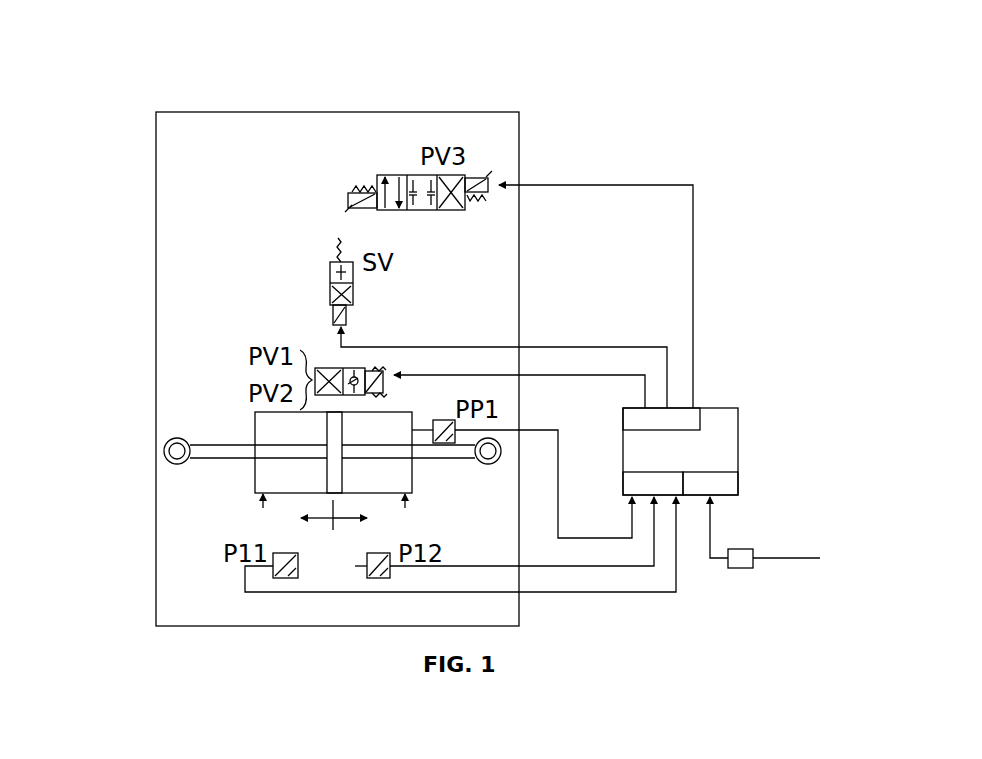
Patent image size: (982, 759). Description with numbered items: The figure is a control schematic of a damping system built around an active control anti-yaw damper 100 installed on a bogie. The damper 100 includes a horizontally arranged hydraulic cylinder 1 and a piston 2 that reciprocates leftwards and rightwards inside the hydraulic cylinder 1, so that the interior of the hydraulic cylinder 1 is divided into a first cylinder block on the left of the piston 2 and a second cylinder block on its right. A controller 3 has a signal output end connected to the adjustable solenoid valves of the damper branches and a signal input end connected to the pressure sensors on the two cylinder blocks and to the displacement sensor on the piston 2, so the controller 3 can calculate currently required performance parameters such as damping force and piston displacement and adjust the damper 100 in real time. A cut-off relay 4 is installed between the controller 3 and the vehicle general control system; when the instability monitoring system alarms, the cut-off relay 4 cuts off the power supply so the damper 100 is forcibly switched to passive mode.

The active control anti-yaw damper 100 is at (497, 112).
The hydraulic cylinder 1 is at (267, 428).
The piston 2 is at (337, 465).
The controller 3 is at (718, 442).
The cut-off relay 4 is at (738, 552).